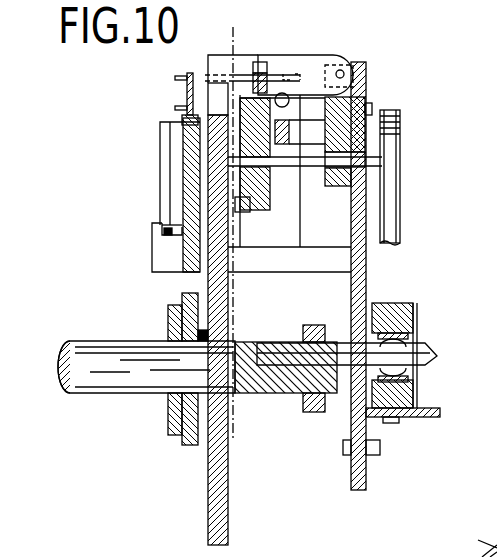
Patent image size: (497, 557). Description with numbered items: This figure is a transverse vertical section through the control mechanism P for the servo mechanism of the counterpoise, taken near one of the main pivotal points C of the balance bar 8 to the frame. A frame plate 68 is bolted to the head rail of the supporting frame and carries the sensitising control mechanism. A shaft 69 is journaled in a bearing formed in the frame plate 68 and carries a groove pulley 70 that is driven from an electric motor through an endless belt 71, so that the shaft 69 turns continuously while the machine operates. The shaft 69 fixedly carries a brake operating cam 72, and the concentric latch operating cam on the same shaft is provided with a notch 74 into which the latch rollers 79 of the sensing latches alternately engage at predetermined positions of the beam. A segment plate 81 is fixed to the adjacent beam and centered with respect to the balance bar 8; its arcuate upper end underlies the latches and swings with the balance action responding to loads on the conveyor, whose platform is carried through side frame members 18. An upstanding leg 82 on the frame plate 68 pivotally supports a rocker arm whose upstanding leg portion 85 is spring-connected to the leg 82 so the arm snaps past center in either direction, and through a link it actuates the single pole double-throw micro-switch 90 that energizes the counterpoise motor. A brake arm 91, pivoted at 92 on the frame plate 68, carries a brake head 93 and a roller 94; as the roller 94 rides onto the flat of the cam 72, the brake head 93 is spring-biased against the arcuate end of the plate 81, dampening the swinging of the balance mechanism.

The balance bar 8 is at (106, 391).
The side frame members 18 is at (218, 27).
The frame plate 68 is at (368, 272).
The shaft 69 is at (302, 166).
The groove pulley 70 is at (401, 175).
The endless belt 71 is at (401, 237).
The brake operating cam 72 is at (270, 207).
The notch 74 is at (241, 212).
The latch rollers 79 is at (254, 73).
The segment plate 81 is at (228, 497).
The upstanding leg 82 is at (182, 206).
The upstanding leg portion 85 is at (187, 95).
The micro-switch 90 is at (157, 255).
The brake arm 91 is at (346, 58).
The pivot 92 is at (344, 76).
The brake head 93 is at (205, 117).
The roller 94 is at (272, 70).
The control mechanism P is at (145, 189).
The main pivotal points C is at (430, 341).